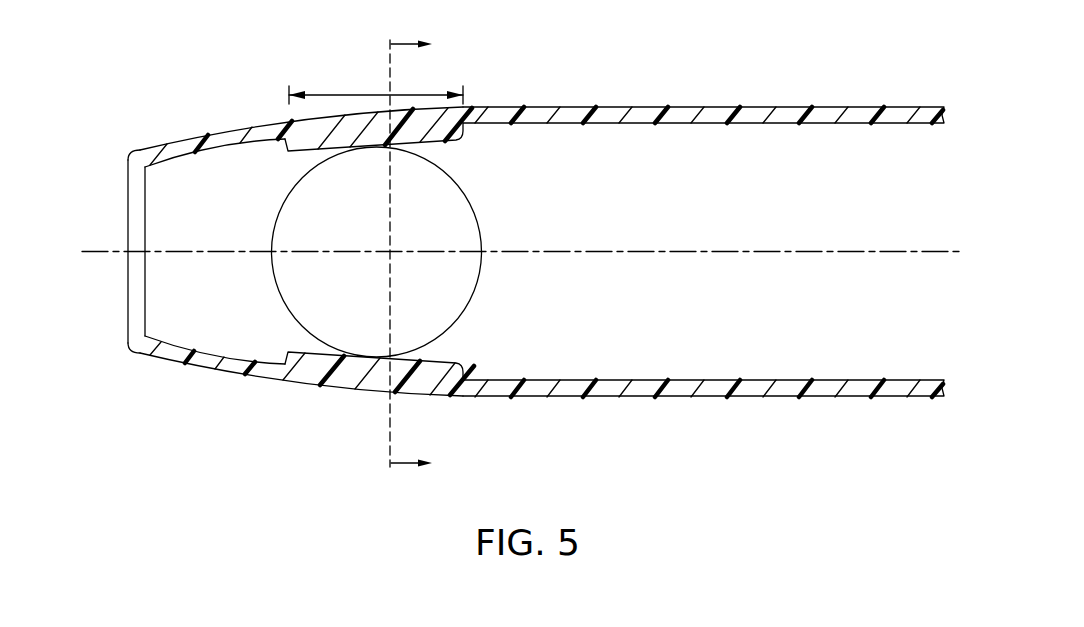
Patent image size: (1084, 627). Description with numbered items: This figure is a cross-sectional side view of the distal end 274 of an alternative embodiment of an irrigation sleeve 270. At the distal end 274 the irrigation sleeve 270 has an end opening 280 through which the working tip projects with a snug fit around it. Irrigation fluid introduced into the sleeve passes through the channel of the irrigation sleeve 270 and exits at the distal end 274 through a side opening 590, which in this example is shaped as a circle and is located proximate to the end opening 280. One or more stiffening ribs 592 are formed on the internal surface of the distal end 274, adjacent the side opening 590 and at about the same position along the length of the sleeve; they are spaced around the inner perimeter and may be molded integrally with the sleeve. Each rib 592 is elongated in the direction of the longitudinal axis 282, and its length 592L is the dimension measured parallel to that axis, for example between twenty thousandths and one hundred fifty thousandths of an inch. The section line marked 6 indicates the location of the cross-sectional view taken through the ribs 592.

The irrigation sleeve 270 is at (714, 106).
The distal end 274 is at (262, 446).
The end opening 280 is at (116, 194).
The longitudinal axis 282 is at (804, 250).
The side opening 590 is at (472, 298).
The stiffening rib 592 is at (463, 117).
The rib length 592L is at (341, 92).
The section line 6- 6 is at (419, 256).